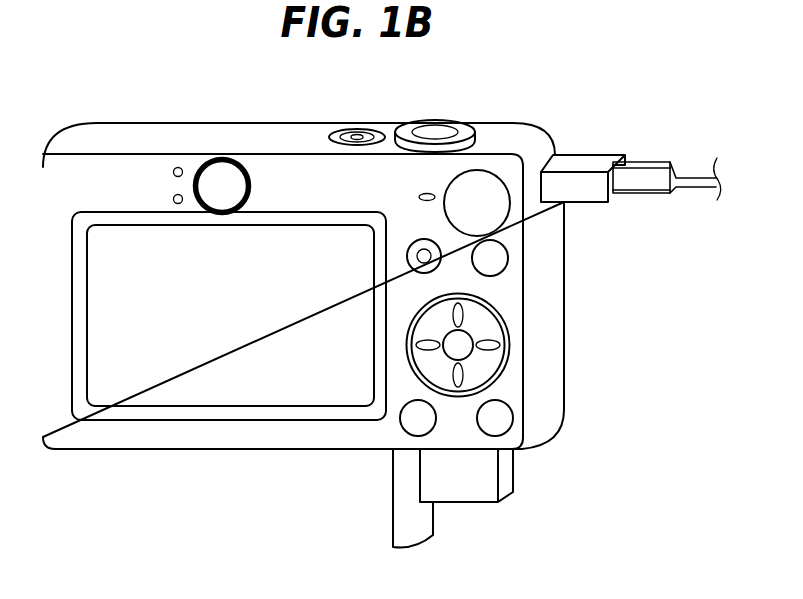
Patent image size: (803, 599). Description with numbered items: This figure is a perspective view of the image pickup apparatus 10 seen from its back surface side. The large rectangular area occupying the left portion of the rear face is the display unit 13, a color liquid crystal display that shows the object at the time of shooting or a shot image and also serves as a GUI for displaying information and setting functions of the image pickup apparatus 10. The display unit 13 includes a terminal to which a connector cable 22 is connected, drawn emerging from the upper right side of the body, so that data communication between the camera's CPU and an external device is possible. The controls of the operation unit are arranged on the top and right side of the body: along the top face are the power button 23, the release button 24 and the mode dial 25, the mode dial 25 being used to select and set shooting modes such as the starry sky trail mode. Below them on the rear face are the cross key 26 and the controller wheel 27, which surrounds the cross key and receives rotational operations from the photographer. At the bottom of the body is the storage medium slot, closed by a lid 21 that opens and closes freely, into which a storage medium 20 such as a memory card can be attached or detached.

The image pickup apparatus 10 is at (127, 477).
The display unit 13 is at (153, 237).
The storage medium 20 is at (490, 472).
The lid 21 is at (420, 525).
The connector cable 22 is at (585, 163).
The power button 23 is at (357, 131).
The release button 24 is at (432, 128).
The mode dial 25 is at (484, 180).
The cross key 26 is at (487, 322).
The controller wheel 27 is at (510, 356).